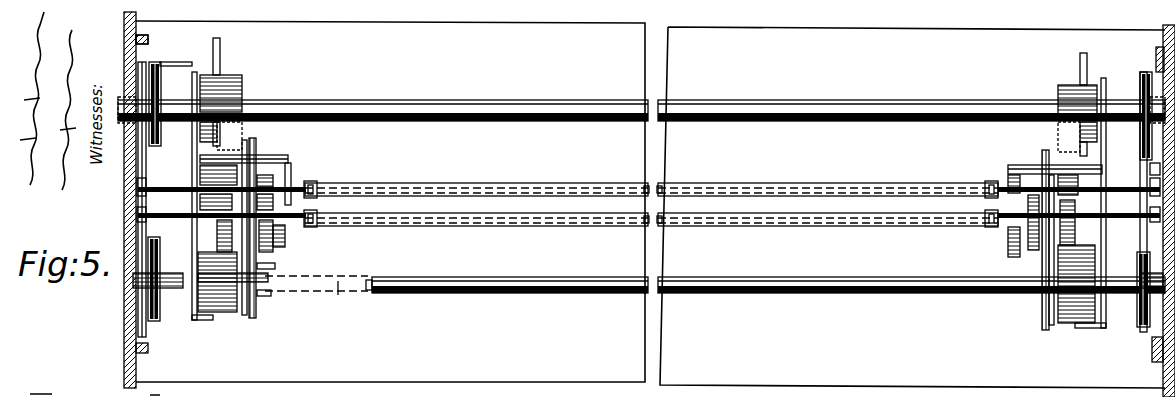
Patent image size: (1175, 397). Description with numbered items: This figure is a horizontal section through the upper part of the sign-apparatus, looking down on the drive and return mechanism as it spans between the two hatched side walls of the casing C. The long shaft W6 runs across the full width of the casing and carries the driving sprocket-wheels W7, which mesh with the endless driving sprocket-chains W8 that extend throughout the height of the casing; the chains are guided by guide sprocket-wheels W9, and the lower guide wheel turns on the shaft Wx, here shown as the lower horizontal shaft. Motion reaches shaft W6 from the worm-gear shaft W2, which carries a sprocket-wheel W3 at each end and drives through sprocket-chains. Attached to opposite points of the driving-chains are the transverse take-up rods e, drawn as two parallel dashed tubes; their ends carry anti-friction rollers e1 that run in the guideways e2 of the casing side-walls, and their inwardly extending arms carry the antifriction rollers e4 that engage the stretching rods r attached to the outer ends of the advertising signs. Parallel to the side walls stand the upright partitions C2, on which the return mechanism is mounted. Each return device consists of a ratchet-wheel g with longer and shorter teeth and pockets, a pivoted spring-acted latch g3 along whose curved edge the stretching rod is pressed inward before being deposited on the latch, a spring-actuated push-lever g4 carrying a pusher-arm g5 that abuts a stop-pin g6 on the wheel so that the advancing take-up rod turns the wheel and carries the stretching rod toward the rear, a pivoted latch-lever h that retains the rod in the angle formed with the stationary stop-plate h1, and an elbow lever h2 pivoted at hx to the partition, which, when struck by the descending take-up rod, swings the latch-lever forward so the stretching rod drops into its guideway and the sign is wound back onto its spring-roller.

The shaft W6 is at (402, 100).
The take-up rod e is at (510, 220).
The antifriction roller e4 is at (312, 190).
The shaft Wx is at (420, 293).
The anti-friction roller e1 is at (138, 185).
The casing C is at (128, 143).
The driving sprocket-wheel W7 is at (158, 68).
The shaft W2 is at (1142, 95).
The guide sprocket-wheel W9 is at (154, 320).
The driving sprocket-chain W8 is at (150, 231).
The sprocket-wheel W3 is at (1148, 172).
The guideway e2 is at (146, 52).
The upright partition C2 is at (200, 136).
The stop-plate h1 is at (241, 82).
The elbow lever h2 is at (221, 55).
The latch-lever h is at (237, 138).
The pivot hx is at (176, 72).
The pivoted latch g3 is at (227, 310).
The ratchet-wheel g is at (262, 182).
The push-lever g4 is at (252, 262).
The stop-pin g6 is at (280, 163).
The pusher-arm g5 is at (270, 200).
The stretching rod r is at (338, 281).